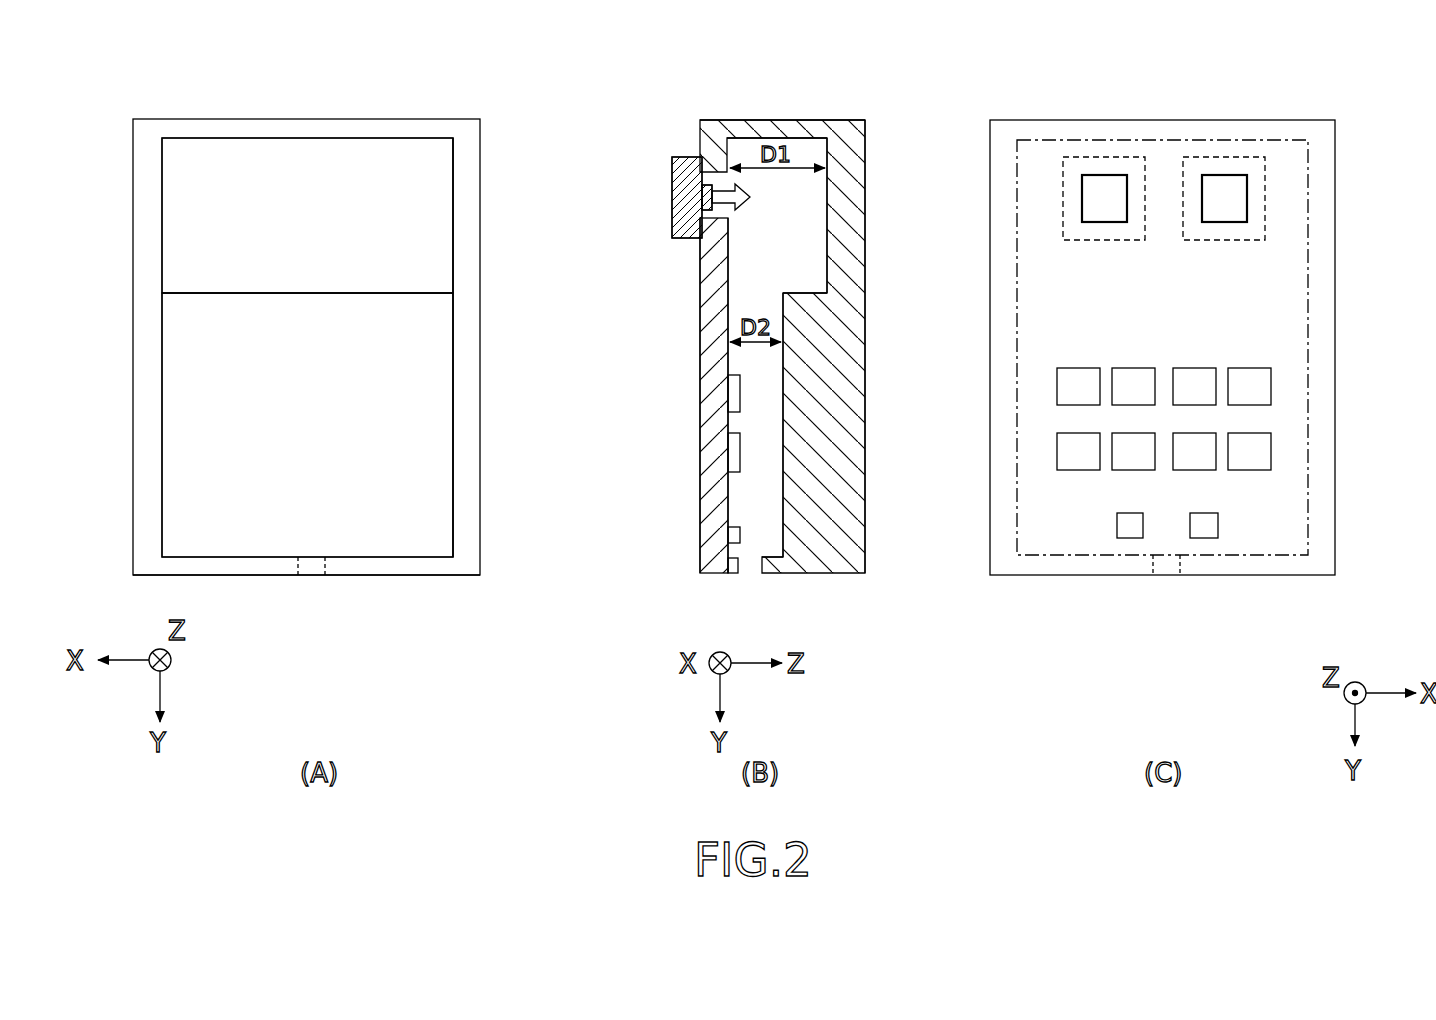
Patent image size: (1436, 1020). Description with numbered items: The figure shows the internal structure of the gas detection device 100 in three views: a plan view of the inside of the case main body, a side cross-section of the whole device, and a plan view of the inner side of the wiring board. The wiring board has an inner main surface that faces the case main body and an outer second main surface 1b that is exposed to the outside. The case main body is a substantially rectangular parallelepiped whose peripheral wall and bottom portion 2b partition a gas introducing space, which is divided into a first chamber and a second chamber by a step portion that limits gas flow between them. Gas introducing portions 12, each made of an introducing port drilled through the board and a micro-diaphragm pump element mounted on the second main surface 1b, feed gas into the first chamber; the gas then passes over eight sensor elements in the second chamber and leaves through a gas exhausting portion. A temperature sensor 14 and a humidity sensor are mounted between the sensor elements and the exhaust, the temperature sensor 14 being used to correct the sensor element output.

The gas detection device 100 is at (880, 66).
The second main surface 1b is at (700, 300).
The bottom portion 2b is at (866, 516).
The gas introducing portions 12 is at (1110, 72).
The temperature sensor 14 is at (1127, 530).